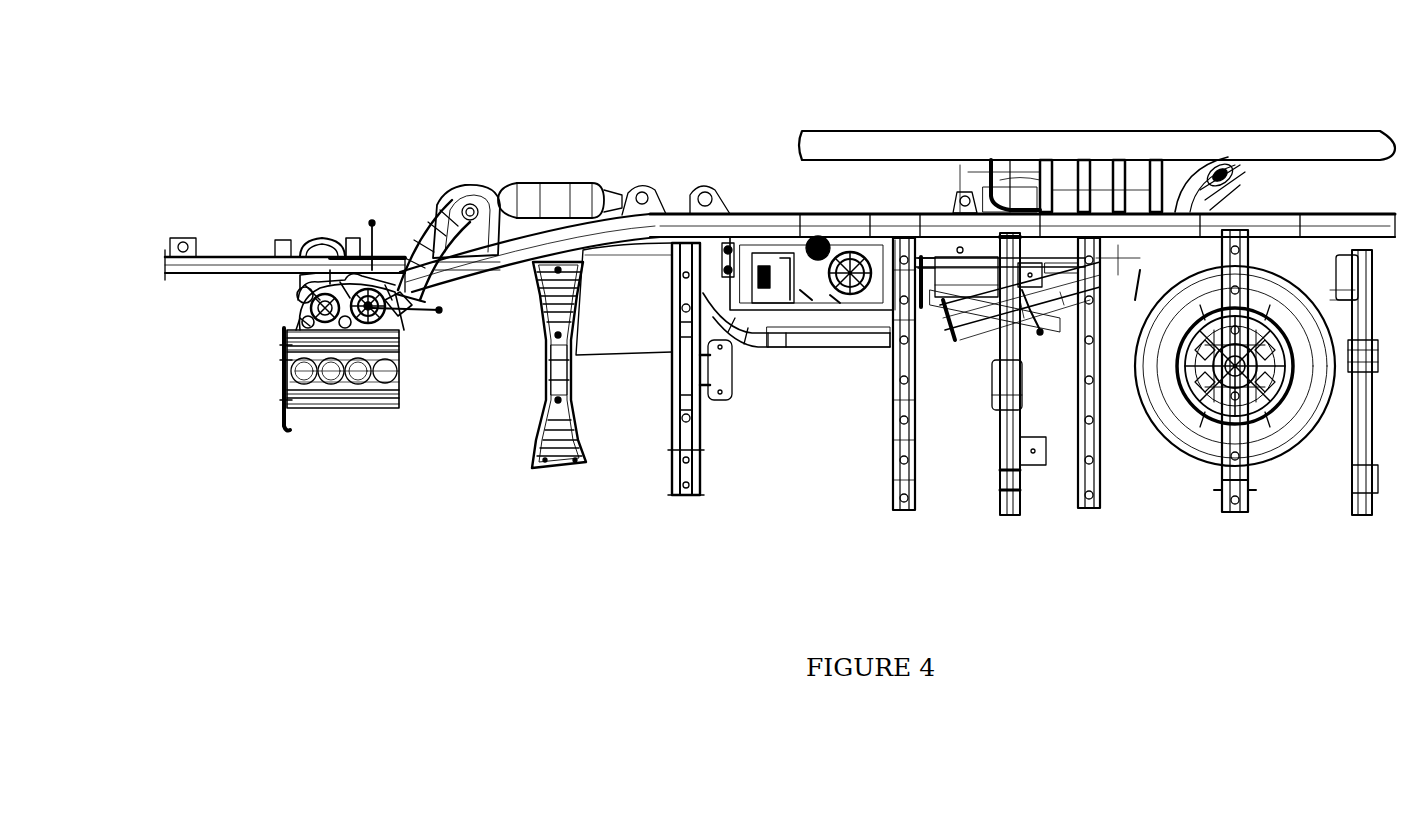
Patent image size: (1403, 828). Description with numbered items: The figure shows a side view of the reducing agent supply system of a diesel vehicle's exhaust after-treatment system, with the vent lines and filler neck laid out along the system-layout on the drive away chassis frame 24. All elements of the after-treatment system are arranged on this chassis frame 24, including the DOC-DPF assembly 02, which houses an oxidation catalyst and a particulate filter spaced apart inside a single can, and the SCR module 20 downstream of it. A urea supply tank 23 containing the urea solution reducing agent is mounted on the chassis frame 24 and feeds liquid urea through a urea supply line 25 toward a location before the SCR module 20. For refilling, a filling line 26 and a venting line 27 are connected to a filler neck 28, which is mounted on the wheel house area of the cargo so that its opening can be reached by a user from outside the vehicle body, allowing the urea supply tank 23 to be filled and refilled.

The SCR module 20 is at (548, 178).
The chassis frame 24 is at (762, 212).
The venting line 27 is at (960, 245).
The filler neck 28 is at (1213, 182).
The DOC-DPF assembly 02 is at (395, 312).
The urea supply line 25 is at (672, 305).
The urea supply tank 23 is at (822, 300).
The filling line 26 is at (967, 285).